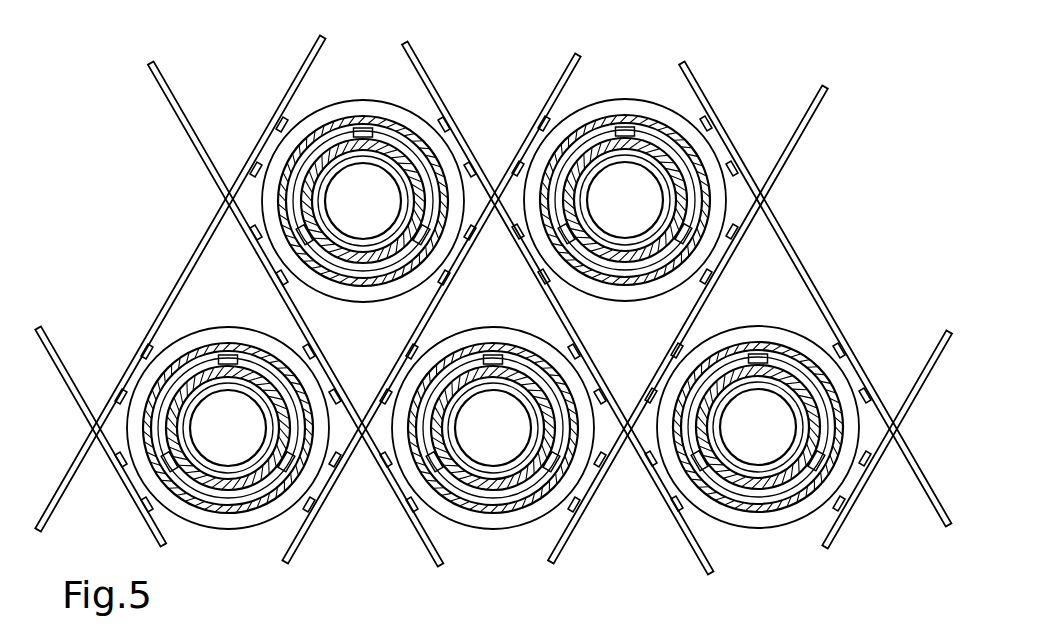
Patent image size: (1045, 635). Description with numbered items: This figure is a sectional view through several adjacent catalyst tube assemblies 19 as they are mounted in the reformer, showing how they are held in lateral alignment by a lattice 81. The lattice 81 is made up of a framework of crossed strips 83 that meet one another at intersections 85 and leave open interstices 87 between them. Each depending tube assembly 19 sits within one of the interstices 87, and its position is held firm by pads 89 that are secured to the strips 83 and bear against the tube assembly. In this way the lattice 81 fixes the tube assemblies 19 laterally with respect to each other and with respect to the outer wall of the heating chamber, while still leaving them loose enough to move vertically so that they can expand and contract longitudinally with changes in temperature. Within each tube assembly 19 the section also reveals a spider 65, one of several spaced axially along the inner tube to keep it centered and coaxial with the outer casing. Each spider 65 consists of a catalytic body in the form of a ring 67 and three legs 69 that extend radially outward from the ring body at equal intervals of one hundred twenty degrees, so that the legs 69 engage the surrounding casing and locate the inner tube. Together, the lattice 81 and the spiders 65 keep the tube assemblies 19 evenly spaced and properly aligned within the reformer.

The tube assembly 19 is at (353, 99).
The spider 65 is at (652, 130).
The ring 67 is at (598, 150).
The legs 69 is at (628, 127).
The lattice 81 is at (840, 234).
The crossed strips 83 is at (443, 299).
The intersections 85 is at (758, 194).
The interstices 87 is at (827, 280).
The pads 89 is at (441, 314).